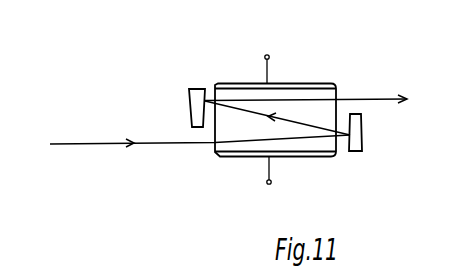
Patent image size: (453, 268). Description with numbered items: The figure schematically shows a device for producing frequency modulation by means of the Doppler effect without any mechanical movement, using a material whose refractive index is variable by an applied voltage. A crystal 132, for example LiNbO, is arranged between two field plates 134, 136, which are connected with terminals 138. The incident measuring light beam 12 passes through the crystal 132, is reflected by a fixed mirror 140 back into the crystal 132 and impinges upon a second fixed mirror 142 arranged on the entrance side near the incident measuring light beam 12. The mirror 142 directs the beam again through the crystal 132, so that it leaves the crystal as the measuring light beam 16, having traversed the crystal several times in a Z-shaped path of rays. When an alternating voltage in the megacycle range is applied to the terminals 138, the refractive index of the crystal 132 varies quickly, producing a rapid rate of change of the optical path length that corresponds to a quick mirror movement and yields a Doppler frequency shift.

The measuring light beam 12 is at (158, 145).
The measuring light beam 16 is at (372, 99).
The crystal 132 is at (300, 92).
The field plate 134 is at (238, 84).
The field plate 136 is at (235, 157).
The terminals 138 is at (269, 56).
The fixed mirror 140 is at (362, 126).
The fixed mirror 142 is at (189, 110).